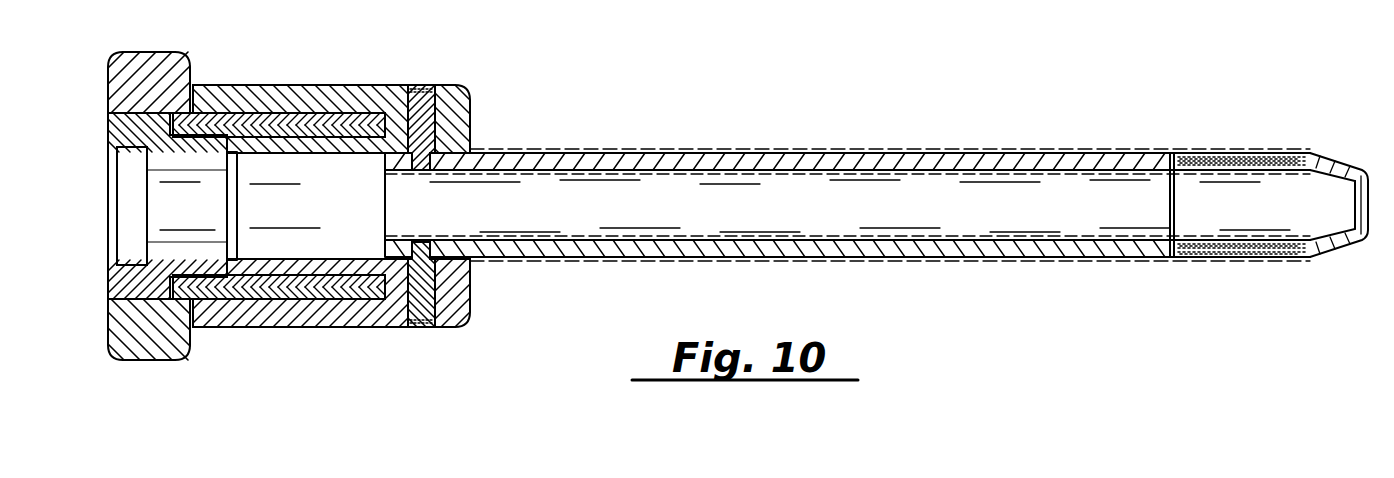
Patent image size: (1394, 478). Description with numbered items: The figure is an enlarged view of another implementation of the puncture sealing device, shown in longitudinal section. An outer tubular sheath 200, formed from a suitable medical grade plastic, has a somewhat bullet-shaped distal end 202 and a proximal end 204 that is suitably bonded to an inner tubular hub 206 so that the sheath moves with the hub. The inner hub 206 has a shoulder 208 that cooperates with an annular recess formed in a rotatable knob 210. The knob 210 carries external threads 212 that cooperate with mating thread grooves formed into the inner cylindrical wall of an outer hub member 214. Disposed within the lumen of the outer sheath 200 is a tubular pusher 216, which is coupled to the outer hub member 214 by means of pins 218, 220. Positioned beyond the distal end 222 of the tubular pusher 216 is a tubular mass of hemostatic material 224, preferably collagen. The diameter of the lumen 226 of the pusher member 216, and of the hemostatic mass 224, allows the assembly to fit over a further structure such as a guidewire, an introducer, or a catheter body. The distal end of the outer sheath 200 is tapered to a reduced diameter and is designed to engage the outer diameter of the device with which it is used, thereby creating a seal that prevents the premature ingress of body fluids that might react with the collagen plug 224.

The outer tubular sheath 200 is at (778, 152).
The distal end 202 is at (1348, 165).
The proximal end 204 is at (223, 230).
The inner tubular hub 206 is at (327, 270).
The shoulder 208 is at (203, 108).
The rotatable knob 210 is at (148, 365).
The external threads 212 is at (323, 113).
The outer hub member 214 is at (293, 83).
The tubular pusher 216 is at (578, 250).
The pin 218 is at (423, 323).
The pin 220 is at (423, 90).
The distal end of the tubular pusher 222 is at (1168, 218).
The hemostatic material 224 is at (1267, 253).
The lumen 226 is at (636, 180).